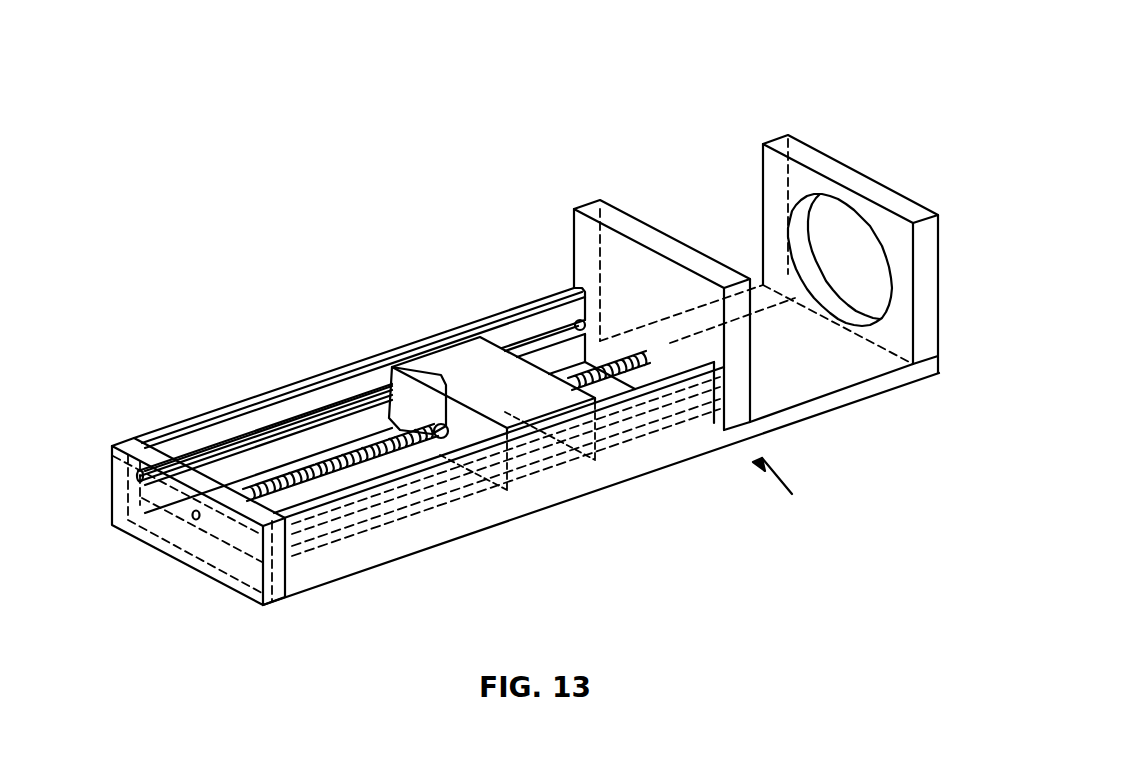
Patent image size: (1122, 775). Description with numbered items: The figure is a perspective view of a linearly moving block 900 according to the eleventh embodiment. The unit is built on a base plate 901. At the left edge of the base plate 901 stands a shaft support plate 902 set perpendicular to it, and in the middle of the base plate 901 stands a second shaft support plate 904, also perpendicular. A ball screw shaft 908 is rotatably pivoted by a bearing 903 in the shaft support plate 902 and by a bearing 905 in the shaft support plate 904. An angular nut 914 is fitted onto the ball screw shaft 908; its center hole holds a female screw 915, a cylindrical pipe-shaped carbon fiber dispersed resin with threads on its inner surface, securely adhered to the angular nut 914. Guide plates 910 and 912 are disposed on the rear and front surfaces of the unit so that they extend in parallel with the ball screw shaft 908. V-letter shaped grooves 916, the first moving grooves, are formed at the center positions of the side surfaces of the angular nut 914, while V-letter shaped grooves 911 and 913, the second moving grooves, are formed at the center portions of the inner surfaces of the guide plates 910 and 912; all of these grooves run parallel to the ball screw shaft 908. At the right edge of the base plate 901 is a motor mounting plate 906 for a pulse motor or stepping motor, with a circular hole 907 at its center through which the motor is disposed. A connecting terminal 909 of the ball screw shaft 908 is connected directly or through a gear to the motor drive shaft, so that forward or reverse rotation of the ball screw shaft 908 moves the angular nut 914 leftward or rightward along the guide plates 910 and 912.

The linearly moving block 900 is at (796, 493).
The base plate 901 is at (652, 462).
The shaft support plate 902 is at (245, 548).
The bearing 903 is at (193, 519).
The shaft support plate 904 is at (628, 220).
The bearing 905 is at (584, 362).
The motor mounting plate 906 is at (826, 160).
The circular hole 907 is at (790, 215).
The ball screw shaft 908 is at (320, 478).
The connecting terminal 909 is at (826, 418).
The guide plate 910 is at (262, 396).
The V-letter shaped groove 911 is at (205, 450).
The guide plate 912 is at (397, 517).
The V-letter shaped groove 913 is at (455, 488).
The angular nut 914 is at (462, 357).
The female screw 915 is at (437, 423).
The V-letter shaped grooves 916 is at (393, 378).